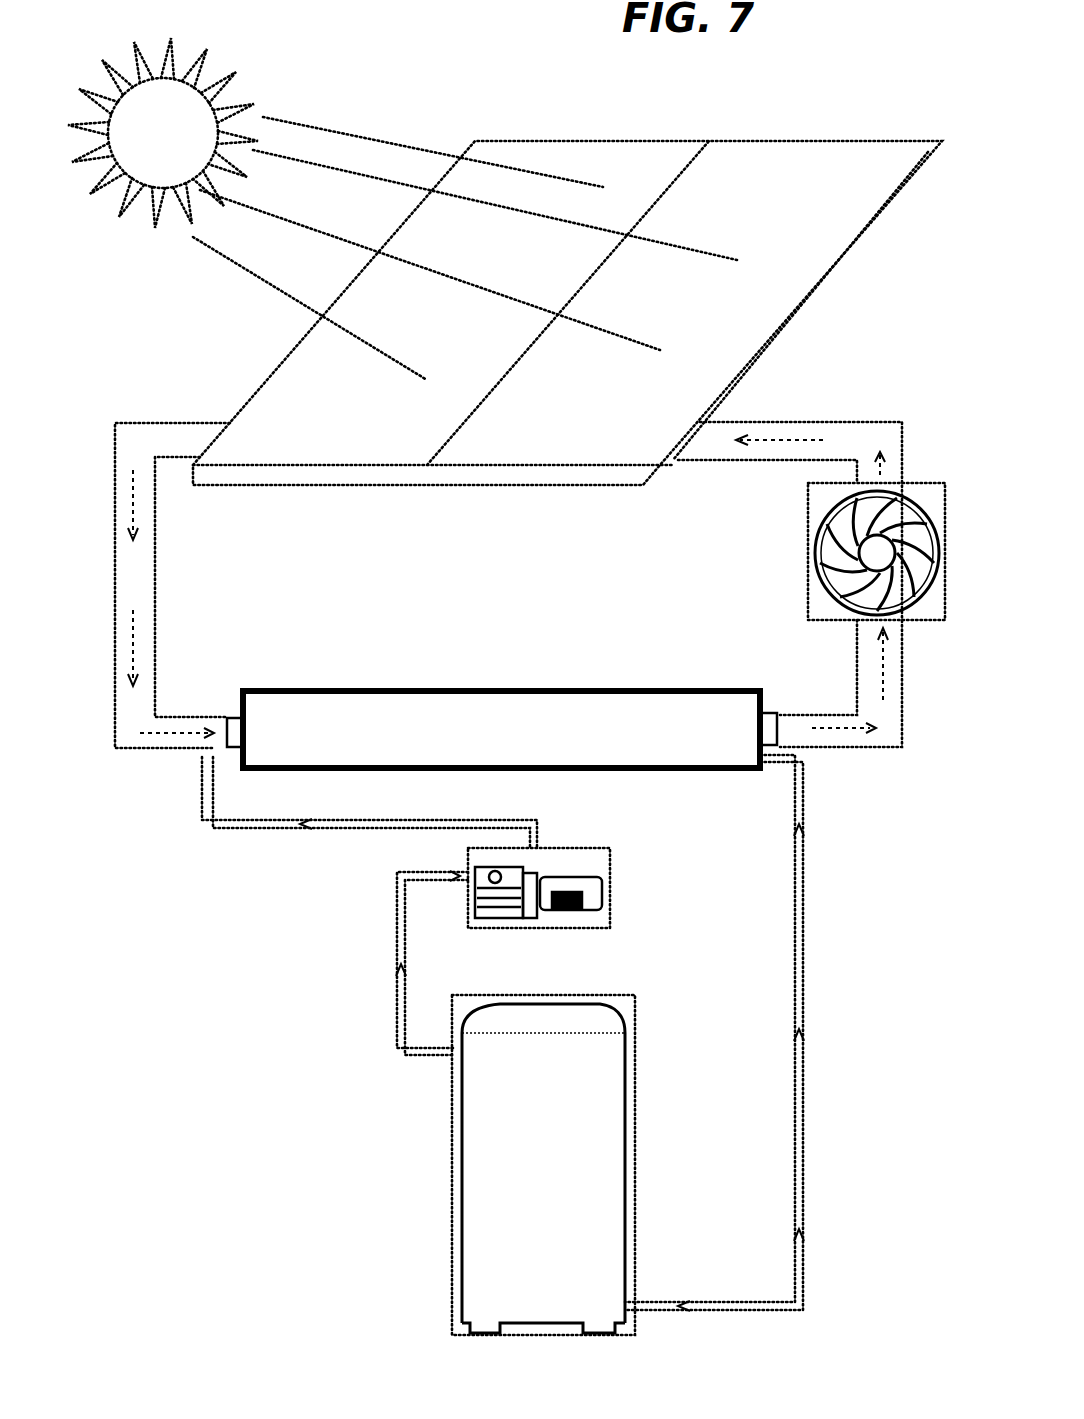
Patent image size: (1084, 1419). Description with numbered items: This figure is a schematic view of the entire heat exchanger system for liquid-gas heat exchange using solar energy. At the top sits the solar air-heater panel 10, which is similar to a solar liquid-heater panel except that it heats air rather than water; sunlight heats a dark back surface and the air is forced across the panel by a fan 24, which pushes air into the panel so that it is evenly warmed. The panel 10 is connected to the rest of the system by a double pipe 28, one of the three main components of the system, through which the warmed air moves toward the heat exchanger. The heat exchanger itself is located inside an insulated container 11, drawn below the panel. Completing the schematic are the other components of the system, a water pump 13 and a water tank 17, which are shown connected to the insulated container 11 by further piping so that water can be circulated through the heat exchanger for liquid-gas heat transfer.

The solar air-heater panel 10 is at (718, 307).
The insulated container 11 is at (522, 750).
The water pump 13 is at (575, 912).
The water tank 17 is at (557, 1179).
The fan 24 is at (808, 545).
The double pipe 28 is at (137, 588).